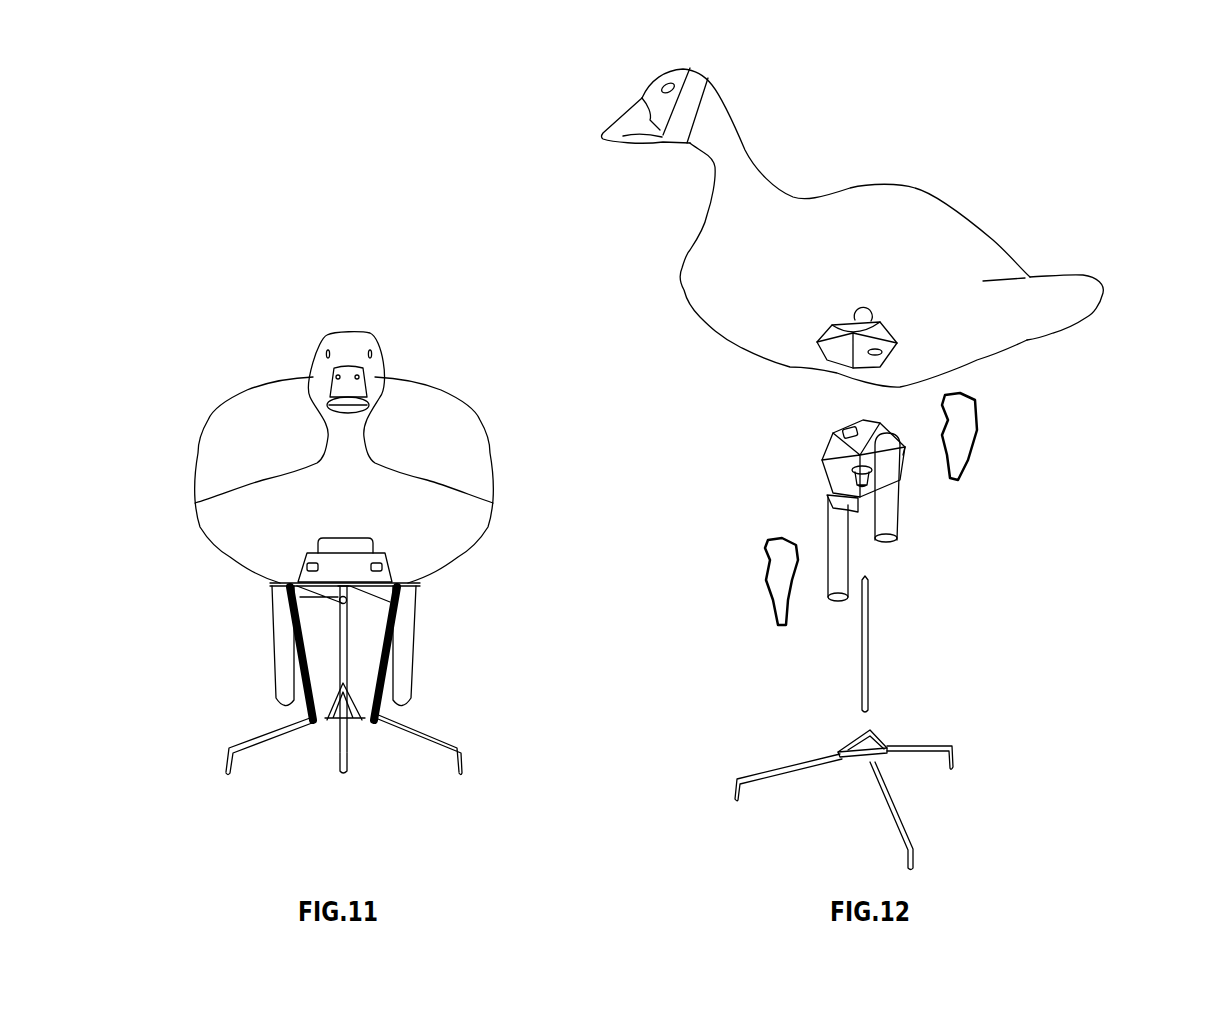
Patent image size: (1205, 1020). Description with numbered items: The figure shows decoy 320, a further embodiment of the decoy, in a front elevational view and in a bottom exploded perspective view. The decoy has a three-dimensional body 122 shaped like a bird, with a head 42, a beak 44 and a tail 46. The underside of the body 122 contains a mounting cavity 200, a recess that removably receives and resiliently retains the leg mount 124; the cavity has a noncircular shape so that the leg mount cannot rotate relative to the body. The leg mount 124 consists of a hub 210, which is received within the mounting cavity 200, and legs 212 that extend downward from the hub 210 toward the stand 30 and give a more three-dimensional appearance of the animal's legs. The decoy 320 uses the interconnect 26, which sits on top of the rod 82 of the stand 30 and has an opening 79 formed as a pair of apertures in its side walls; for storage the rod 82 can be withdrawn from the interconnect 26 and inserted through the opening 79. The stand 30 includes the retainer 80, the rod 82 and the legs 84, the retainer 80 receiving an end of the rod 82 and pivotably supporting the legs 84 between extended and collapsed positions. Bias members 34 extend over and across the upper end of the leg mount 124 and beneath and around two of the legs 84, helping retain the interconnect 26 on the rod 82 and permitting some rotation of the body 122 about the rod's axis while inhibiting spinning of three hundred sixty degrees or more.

In FIG. 11, the decoy 320 is at (195, 278).
In FIG. 12, the decoy 320 is at (975, 122).
In FIG. 11, the head 42 is at (372, 333).
In FIG. 12, the head 42 is at (695, 70).
In FIG. 11, the beak 44 is at (367, 400).
In FIG. 12, the beak 44 is at (625, 120).
In FIG. 11, the body 122 is at (485, 457).
In FIG. 12, the body 122 is at (950, 202).
In FIG. 12, the tail 46 is at (1097, 280).
In FIG. 12, the mounting cavity 200 is at (887, 347).
In FIG. 11, the leg mount 124 is at (430, 601).
In FIG. 12, the leg mount 124 is at (813, 435).
In FIG. 11, the opening 79 is at (340, 588).
In FIG. 11, the interconnect 26 is at (340, 602).
In FIG. 12, the interconnect 26 is at (867, 478).
In FIG. 11, the legs 212 is at (275, 663).
In FIG. 12, the legs 212 is at (828, 540).
In FIG. 11, the rod 82 is at (340, 667).
In FIG. 12, the rod 82 is at (868, 635).
In FIG. 11, the legs 84 is at (252, 747).
In FIG. 12, the legs 84 is at (797, 763).
In FIG. 11, the stand 30 is at (505, 724).
In FIG. 12, the stand 30 is at (936, 713).
In FIG. 11, the retainer 80 is at (345, 701).
In FIG. 12, the retainer 80 is at (852, 738).
In FIG. 12, the hub 210 is at (903, 463).
In FIG. 12, the bias members 34 is at (977, 430).